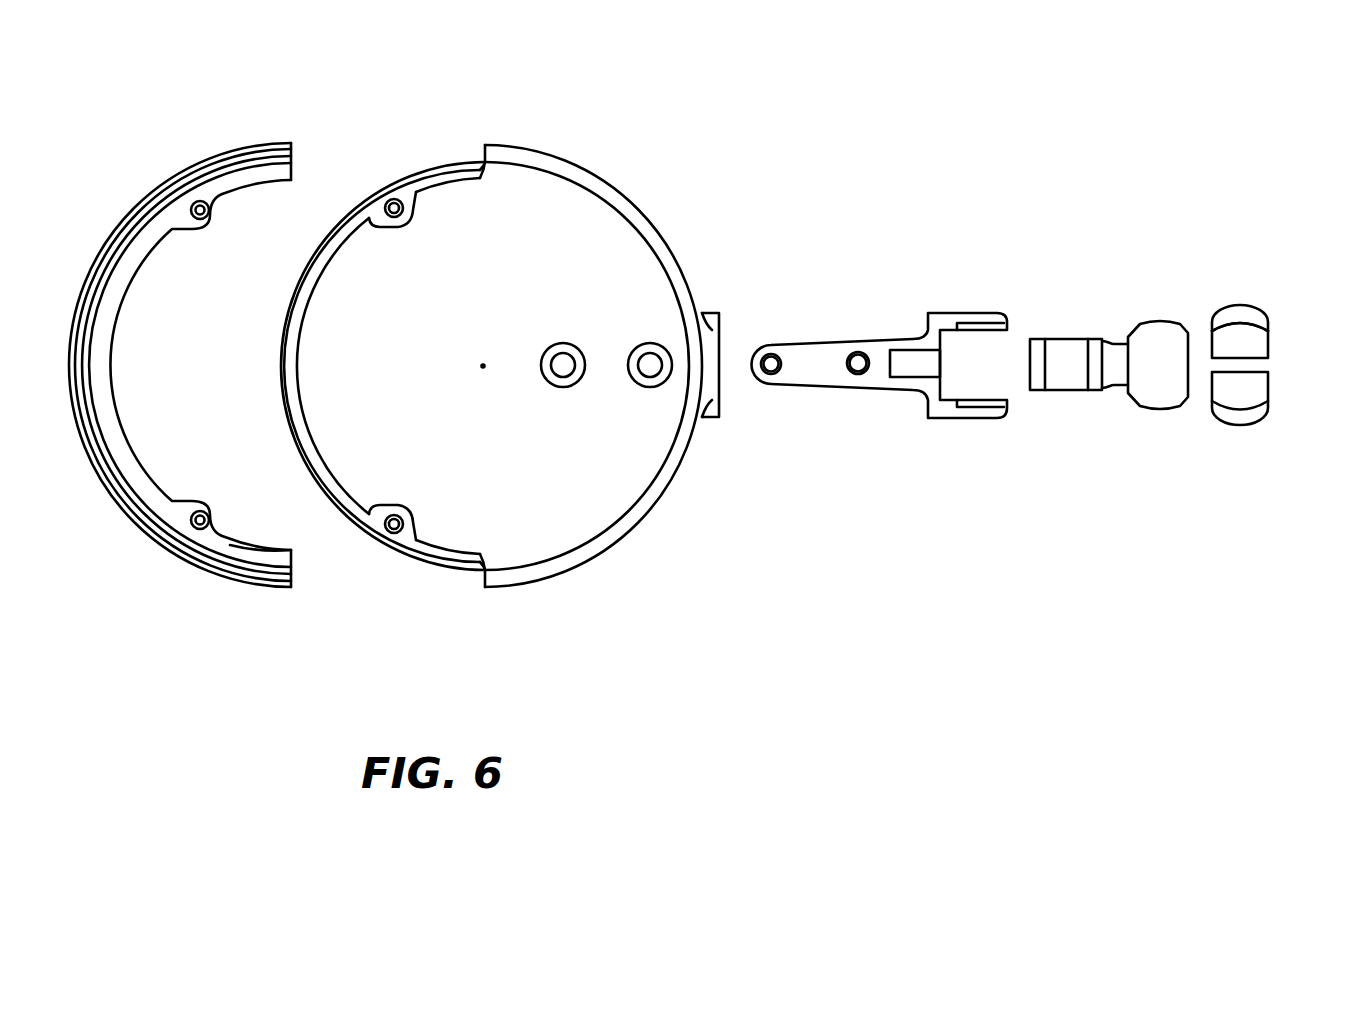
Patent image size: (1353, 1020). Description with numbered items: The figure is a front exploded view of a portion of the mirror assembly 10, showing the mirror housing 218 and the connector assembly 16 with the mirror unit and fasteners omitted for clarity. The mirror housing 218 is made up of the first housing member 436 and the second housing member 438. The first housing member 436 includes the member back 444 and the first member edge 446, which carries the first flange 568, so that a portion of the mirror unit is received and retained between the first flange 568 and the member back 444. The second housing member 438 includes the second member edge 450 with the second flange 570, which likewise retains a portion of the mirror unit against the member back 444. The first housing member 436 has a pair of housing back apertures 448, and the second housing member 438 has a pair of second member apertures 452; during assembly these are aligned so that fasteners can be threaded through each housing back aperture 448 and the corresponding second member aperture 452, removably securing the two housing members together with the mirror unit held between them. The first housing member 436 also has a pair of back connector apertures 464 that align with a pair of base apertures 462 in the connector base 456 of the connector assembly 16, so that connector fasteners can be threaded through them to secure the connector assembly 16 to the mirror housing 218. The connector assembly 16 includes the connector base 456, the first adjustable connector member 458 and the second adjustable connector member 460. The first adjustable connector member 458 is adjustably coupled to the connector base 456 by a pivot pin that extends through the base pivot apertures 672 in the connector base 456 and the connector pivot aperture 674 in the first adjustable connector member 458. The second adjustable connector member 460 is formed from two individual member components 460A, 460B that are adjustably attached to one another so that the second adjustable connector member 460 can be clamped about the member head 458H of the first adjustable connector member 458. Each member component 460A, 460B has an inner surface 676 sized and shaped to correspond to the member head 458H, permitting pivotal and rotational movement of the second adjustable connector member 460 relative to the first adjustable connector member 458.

The mirror assembly 10 is at (567, 344).
The connector assembly 16 is at (983, 376).
The mirror housing 218 is at (577, 160).
The first housing member 436 is at (585, 527).
The second housing member 438 is at (237, 578).
The member back 444 is at (633, 275).
The first member edge 446 is at (690, 450).
The housing back apertures 448 is at (391, 198).
The second member edge 450 is at (127, 213).
The second member apertures 452 is at (202, 508).
The connector base 456 is at (818, 373).
The first adjustable connector member 458 is at (1108, 353).
The member head 458H is at (1155, 338).
The second adjustable connector member 460 is at (1258, 389).
The member component 460A is at (1237, 313).
The member component 460B is at (1245, 418).
The base apertures 462 is at (862, 352).
The back connector apertures 464 is at (670, 352).
The first flange 568 is at (652, 495).
The second flange 570 is at (235, 170).
The base pivot apertures 672 is at (975, 318).
The connector pivot aperture 674 is at (1052, 387).
The inner surface 676 is at (1227, 323).